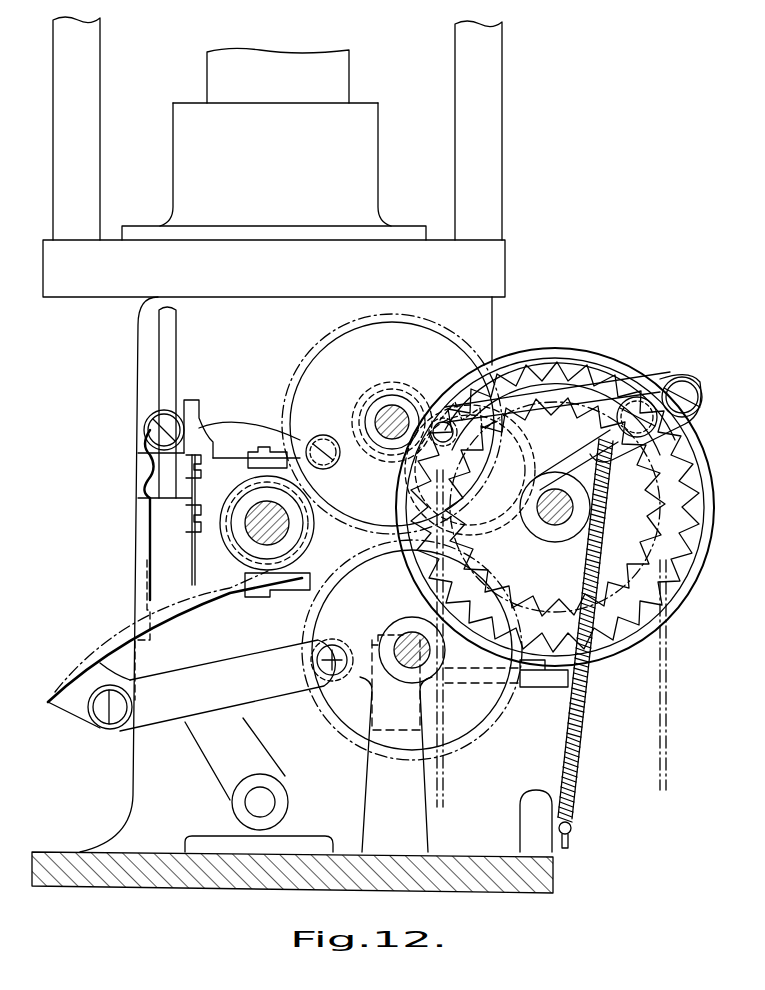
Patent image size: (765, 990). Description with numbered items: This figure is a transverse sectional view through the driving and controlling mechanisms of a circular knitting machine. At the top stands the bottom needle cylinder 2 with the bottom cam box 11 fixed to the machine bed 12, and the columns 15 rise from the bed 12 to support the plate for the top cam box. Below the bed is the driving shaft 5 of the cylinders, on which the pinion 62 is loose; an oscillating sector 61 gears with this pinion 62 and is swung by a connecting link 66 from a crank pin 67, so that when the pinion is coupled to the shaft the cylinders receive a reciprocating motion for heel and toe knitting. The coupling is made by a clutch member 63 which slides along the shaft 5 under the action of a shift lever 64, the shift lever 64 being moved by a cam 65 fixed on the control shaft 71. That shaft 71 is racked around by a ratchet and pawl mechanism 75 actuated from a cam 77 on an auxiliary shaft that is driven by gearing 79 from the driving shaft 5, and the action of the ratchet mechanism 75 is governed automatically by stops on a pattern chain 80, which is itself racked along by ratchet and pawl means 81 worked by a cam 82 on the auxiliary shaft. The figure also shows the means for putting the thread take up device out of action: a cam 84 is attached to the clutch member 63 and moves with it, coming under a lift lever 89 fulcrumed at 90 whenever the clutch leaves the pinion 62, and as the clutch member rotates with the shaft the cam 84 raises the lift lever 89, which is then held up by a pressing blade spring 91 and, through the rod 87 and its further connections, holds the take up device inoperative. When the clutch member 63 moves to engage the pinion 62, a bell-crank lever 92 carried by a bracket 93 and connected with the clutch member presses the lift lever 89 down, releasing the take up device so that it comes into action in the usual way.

The bottom needle cylinder 2 is at (278, 75).
The bottom cam box 11 is at (274, 171).
The machine bed 12 is at (274, 268).
The columns 15 is at (277, 128).
The rod 87 is at (168, 363).
The lift lever 89 is at (230, 435).
The fulcrum 90 is at (324, 436).
The gearing 79 is at (392, 424).
The cam 82 is at (452, 430).
The ratchet and pawl mechanism 75 is at (530, 402).
The ratchet and pawl means 81 is at (655, 384).
The bracket 93 is at (177, 490).
The bell-crank lever 92 is at (230, 520).
The driving shaft 5 is at (265, 528).
The blade spring 91 is at (150, 556).
The pinion 62 is at (232, 548).
The cam 84 is at (245, 585).
The oscillating sector 61 is at (180, 598).
The connecting link 66 is at (227, 735).
The crank pin 67 is at (318, 662).
The cam 77 is at (390, 442).
The clutch member 63 is at (412, 628).
The shaft 71 is at (555, 528).
The cam 65 is at (613, 655).
The shift lever 64 is at (542, 687).
The pattern chain 80 is at (666, 655).